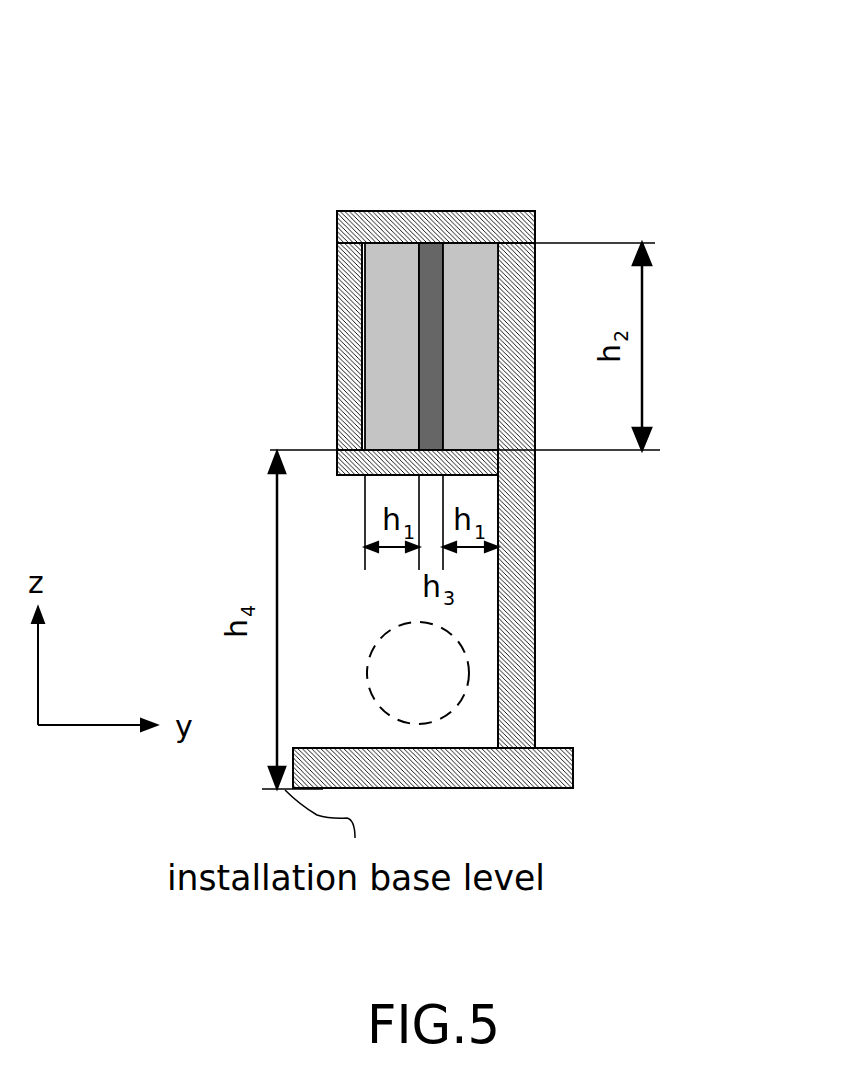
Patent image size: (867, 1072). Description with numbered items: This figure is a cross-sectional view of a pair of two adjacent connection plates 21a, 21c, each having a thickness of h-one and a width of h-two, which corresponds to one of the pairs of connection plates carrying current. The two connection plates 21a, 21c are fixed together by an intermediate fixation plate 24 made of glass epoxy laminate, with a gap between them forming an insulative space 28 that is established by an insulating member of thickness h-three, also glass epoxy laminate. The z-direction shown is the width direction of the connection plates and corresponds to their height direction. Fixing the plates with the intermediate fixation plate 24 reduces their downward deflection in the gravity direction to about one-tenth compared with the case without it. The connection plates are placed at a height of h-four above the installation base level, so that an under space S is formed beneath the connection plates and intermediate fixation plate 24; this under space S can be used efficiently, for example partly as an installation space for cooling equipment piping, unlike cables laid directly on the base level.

The intermediate fixation plate 24 is at (372, 212).
The connection plate 21c is at (472, 253).
The connection plate 21a is at (392, 406).
The insulative space 28 is at (418, 298).
The under space S is at (437, 655).